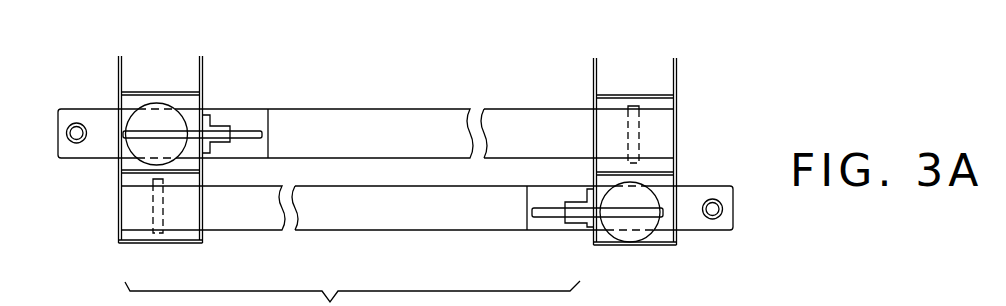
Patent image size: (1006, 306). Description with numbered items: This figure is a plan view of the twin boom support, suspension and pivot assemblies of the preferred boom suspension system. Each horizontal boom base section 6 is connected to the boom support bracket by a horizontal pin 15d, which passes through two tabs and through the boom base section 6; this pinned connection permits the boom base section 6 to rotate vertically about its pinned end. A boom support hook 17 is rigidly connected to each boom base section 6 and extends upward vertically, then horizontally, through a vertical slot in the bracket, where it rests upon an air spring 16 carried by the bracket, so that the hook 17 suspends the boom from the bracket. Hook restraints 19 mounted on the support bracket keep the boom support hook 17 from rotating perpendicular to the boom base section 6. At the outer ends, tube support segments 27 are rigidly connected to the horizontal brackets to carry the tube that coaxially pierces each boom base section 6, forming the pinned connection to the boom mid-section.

The boom base section 6 is at (383, 146).
The air spring 16 is at (167, 130).
The boom support hook 17 is at (242, 133).
The hook restraints 19 is at (208, 126).
The tube support segments 27 is at (78, 121).
The horizontal pin 15d is at (160, 218).